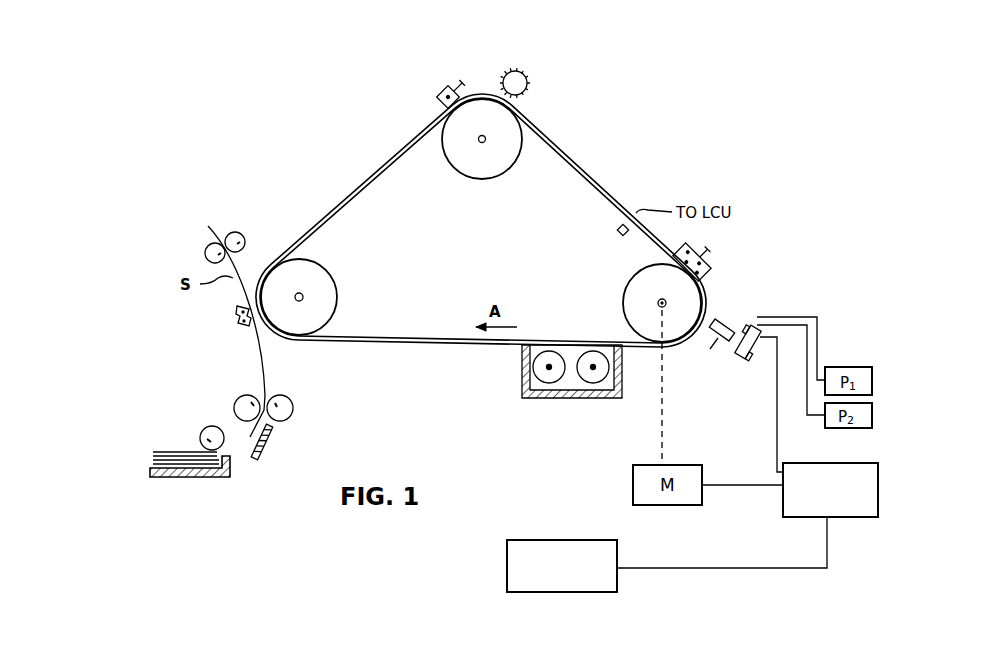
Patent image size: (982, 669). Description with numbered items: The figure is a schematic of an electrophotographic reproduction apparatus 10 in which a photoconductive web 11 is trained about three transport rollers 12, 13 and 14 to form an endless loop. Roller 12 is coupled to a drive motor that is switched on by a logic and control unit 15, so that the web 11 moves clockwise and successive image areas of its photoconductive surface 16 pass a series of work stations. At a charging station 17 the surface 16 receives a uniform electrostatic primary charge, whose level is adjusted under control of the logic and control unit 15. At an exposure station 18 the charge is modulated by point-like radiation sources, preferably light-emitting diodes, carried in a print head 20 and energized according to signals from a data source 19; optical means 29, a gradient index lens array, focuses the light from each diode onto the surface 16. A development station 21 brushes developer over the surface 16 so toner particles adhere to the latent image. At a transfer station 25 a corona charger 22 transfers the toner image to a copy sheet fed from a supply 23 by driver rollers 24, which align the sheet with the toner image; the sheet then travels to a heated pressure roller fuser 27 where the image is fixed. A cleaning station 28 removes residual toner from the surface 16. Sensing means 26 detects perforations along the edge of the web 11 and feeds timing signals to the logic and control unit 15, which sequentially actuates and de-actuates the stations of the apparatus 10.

The electrophotographic reproduction apparatus 10 is at (341, 69).
The photoconductive web 11 is at (310, 216).
The transport roller 12 is at (634, 275).
The transport roller 13 is at (463, 172).
The transport roller 14 is at (340, 286).
The logic and control unit 15 is at (782, 511).
The photoconductive surface 16 is at (579, 168).
The charging station 17 is at (723, 270).
The exposure station 18 is at (750, 312).
The data source 19 is at (618, 578).
The print head 20 is at (746, 359).
The development station 21 is at (519, 380).
The corona charger 22 is at (232, 319).
The supply 23 is at (200, 478).
The driver rollers 24 is at (246, 396).
The transfer station 25 is at (196, 372).
The means for sensing web perforations 26 is at (616, 228).
The heated pressure roller fuser 27 is at (209, 240).
The cleaning station 28 is at (530, 86).
The optical means 29 is at (715, 346).